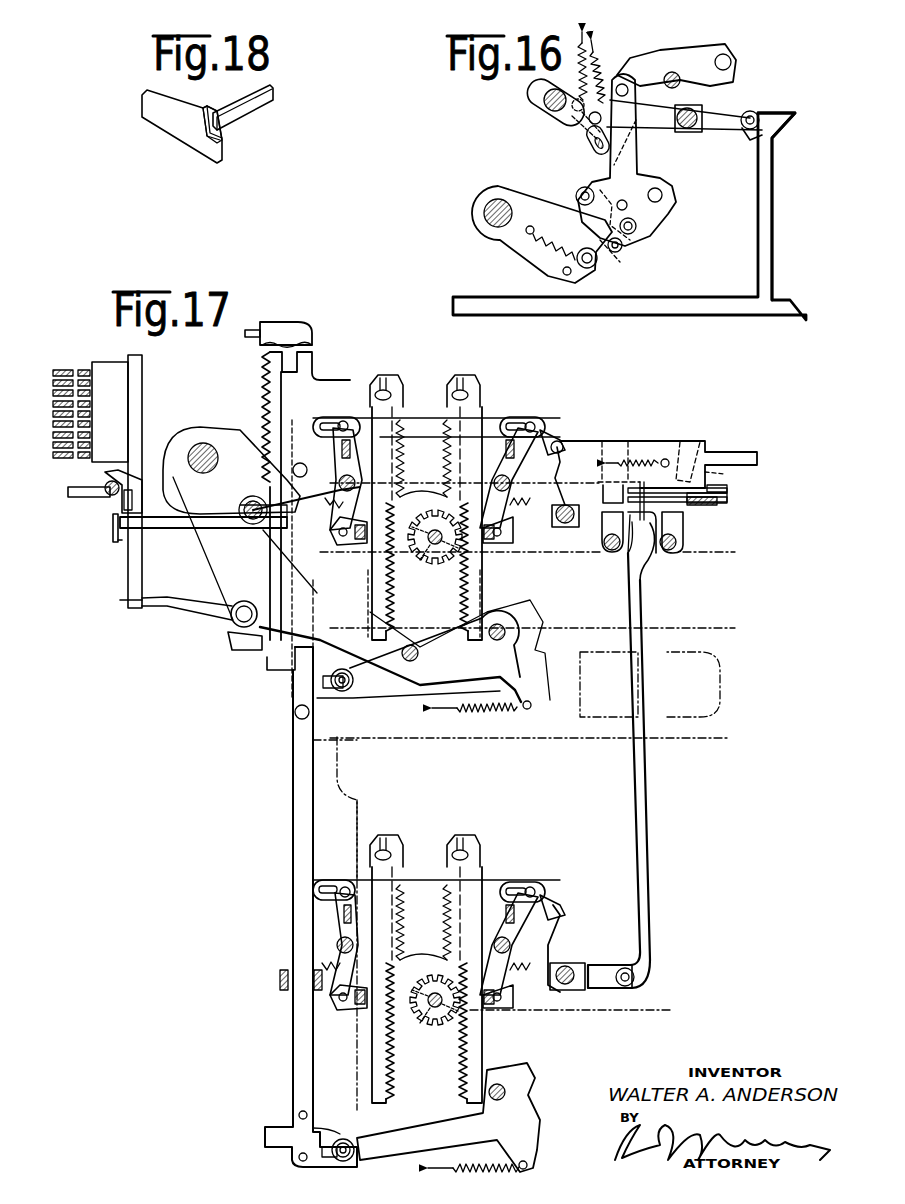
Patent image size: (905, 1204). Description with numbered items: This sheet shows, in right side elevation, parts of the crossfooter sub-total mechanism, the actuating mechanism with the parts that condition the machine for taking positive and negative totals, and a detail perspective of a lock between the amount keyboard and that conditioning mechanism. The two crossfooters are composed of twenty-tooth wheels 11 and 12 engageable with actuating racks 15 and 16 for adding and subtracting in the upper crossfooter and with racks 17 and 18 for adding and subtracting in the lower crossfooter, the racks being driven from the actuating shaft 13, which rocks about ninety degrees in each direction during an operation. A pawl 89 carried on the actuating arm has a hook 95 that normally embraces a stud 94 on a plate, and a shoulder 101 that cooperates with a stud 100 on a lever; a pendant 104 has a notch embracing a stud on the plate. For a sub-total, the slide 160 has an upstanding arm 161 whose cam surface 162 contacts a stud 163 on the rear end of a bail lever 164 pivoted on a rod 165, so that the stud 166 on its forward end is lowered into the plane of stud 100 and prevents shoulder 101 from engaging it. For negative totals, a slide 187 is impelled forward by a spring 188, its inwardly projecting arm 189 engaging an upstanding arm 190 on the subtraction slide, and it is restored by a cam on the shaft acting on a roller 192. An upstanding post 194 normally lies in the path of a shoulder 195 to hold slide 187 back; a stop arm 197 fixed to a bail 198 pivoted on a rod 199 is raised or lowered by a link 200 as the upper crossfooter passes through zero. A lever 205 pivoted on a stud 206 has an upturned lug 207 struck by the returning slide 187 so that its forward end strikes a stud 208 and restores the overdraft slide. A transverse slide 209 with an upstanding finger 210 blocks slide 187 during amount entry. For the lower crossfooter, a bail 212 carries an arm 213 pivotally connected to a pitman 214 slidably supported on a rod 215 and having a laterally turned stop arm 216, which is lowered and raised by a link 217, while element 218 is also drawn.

In FIG. 17, the twenty tooth wheel 11 is at (436, 565).
In FIG. 17, the twenty tooth wheel 12 is at (428, 1025).
In FIG. 16, the actuating shaft 13 is at (495, 222).
In FIG. 17, the actuating shaft 13 is at (203, 445).
In FIG. 17, the actuating rack 15 is at (484, 585).
In FIG. 17, the actuating rack 16 is at (388, 565).
In FIG. 17, the actuating rack 17 is at (484, 1043).
In FIG. 17, the actuating rack 18 is at (372, 1070).
In FIG. 16, the pawl 89 is at (604, 262).
In FIG. 16, the stud 94 is at (622, 253).
In FIG. 16, the hook 95 is at (636, 248).
In FIG. 16, the stud 100 is at (606, 128).
In FIG. 16, the shoulder 101 is at (583, 188).
In FIG. 16, the pendant 104 is at (598, 170).
In FIG. 16, the slide 160 is at (614, 302).
In FIG. 16, the upstanding arm 161 is at (773, 194).
In FIG. 16, the cam surface 162 is at (752, 110).
In FIG. 16, the stud 163 is at (748, 137).
In FIG. 16, the bail lever 164 is at (710, 131).
In FIG. 16, the rod 165 is at (680, 128).
In FIG. 16, the stud 166 is at (549, 115).
In FIG. 18, the slide 187 is at (250, 112).
In FIG. 17, the slide 187 is at (150, 528).
In FIG. 17, the spring 188 is at (627, 445).
In FIG. 17, the inwardly projecting arm 189 is at (729, 478).
In FIG. 17, the upstanding arm 190 is at (700, 445).
In FIG. 17, the roller 192 is at (320, 420).
In FIG. 17, the upstanding post 194 is at (680, 507).
In FIG. 17, the shoulder 195 is at (668, 445).
In FIG. 17, the stop arm 197 is at (623, 501).
In FIG. 17, the bail 198 is at (563, 462).
In FIG. 17, the rod 199 is at (560, 510).
In FIG. 17, the link 200 is at (488, 415).
In FIG. 17, the lever 205 is at (712, 506).
In FIG. 17, the stud 206 is at (727, 500).
In FIG. 17, the upturned lug 207 is at (727, 488).
In FIG. 17, the stud 208 is at (625, 532).
In FIG. 18, the slide 209 is at (180, 133).
In FIG. 17, the slide 209 is at (115, 540).
In FIG. 18, the upstanding finger 210 is at (200, 108).
In FIG. 17, the upstanding finger 210 is at (112, 525).
In FIG. 17, the bail 212 is at (552, 950).
In FIG. 17, the arm 213 is at (606, 990).
In FIG. 17, the pitman 214 is at (647, 773).
In FIG. 17, the rod 215 is at (684, 545).
In FIG. 17, the stop arm 216 is at (658, 556).
In FIG. 17, the link 217 is at (495, 880).
In FIG. 17, the arm 218 is at (684, 560).